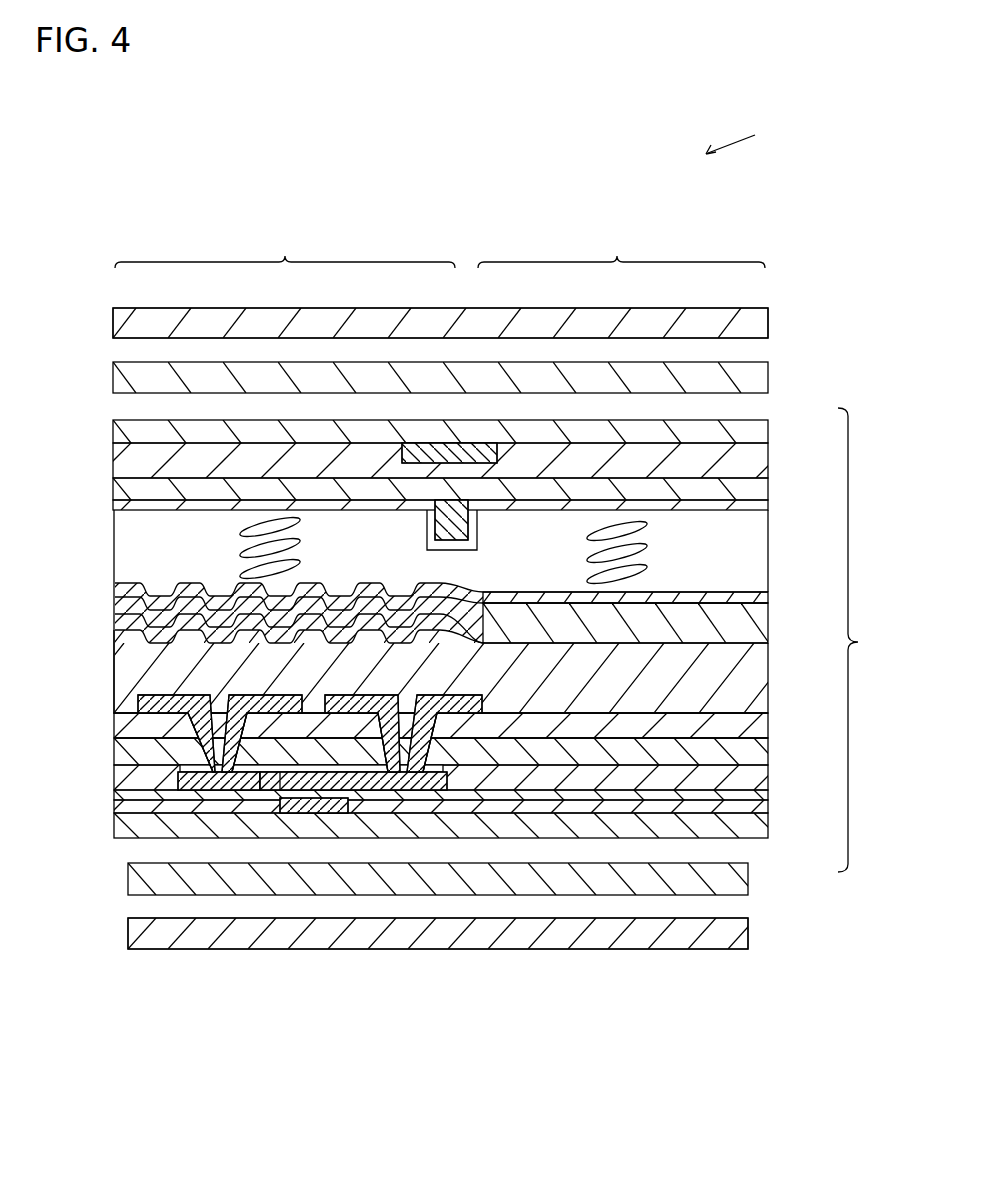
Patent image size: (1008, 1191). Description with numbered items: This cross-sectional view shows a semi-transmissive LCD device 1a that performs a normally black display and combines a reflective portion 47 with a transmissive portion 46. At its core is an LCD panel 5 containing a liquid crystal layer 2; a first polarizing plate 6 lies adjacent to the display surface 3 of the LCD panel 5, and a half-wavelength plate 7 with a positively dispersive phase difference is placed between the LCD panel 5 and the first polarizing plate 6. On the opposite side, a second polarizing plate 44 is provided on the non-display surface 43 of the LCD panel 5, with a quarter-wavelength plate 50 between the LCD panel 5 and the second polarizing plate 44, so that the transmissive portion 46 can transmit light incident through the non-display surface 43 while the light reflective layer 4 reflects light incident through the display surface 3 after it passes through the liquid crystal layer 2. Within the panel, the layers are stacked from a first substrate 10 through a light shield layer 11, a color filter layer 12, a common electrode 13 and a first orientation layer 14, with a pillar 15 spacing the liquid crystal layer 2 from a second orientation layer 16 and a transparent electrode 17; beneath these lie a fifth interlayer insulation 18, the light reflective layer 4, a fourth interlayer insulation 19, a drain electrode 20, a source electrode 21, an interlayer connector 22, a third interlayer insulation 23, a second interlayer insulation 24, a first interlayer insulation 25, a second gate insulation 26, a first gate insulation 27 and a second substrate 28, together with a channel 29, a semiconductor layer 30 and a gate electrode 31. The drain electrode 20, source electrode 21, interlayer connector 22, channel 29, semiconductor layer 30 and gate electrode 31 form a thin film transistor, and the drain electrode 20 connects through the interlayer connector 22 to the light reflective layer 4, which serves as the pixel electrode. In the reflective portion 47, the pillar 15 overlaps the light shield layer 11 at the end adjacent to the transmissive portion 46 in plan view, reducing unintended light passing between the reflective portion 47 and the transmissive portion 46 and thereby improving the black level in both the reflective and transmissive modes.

The LCD device 1a is at (748, 134).
The liquid crystal layer 2 is at (140, 554).
The display surface 3 is at (681, 308).
The light reflective layer 4 is at (150, 632).
The LCD panel 5 is at (862, 640).
The first polarizing plate 6 is at (770, 322).
The half-wavelength plate 7 is at (748, 381).
The first substrate 10 is at (742, 433).
The light shield layer 11 is at (421, 465).
The color filter layer 12 is at (745, 468).
The common electrode 13 is at (760, 490).
The first orientation layer 14 is at (770, 512).
The pillar 15 is at (460, 532).
The second orientation layer 16 is at (755, 597).
The transparent electrode 17 is at (130, 605).
The fifth interlayer insulation 18 is at (140, 622).
The fourth interlayer insulation 19 is at (755, 680).
The drain electrode 20 is at (472, 697).
The source electrode 21 is at (150, 703).
The interlayer connector 22 is at (175, 748).
The third interlayer insulation 23 is at (755, 722).
The second interlayer insulation 24 is at (755, 752).
The first interlayer insulation 25 is at (755, 777).
The second gate insulation 26 is at (745, 796).
The first gate insulation 27 is at (735, 808).
The second substrate 28 is at (715, 832).
The channel 29 is at (302, 775).
The semiconductor layer 30 is at (221, 775).
The gate electrode 31 is at (327, 805).
The non-display surface 43 is at (575, 950).
The second polarizing plate 44 is at (745, 935).
The transmissive portion 46 is at (621, 243).
The reflective portion 47 is at (285, 243).
The quarter-wavelength plate 50 is at (745, 885).